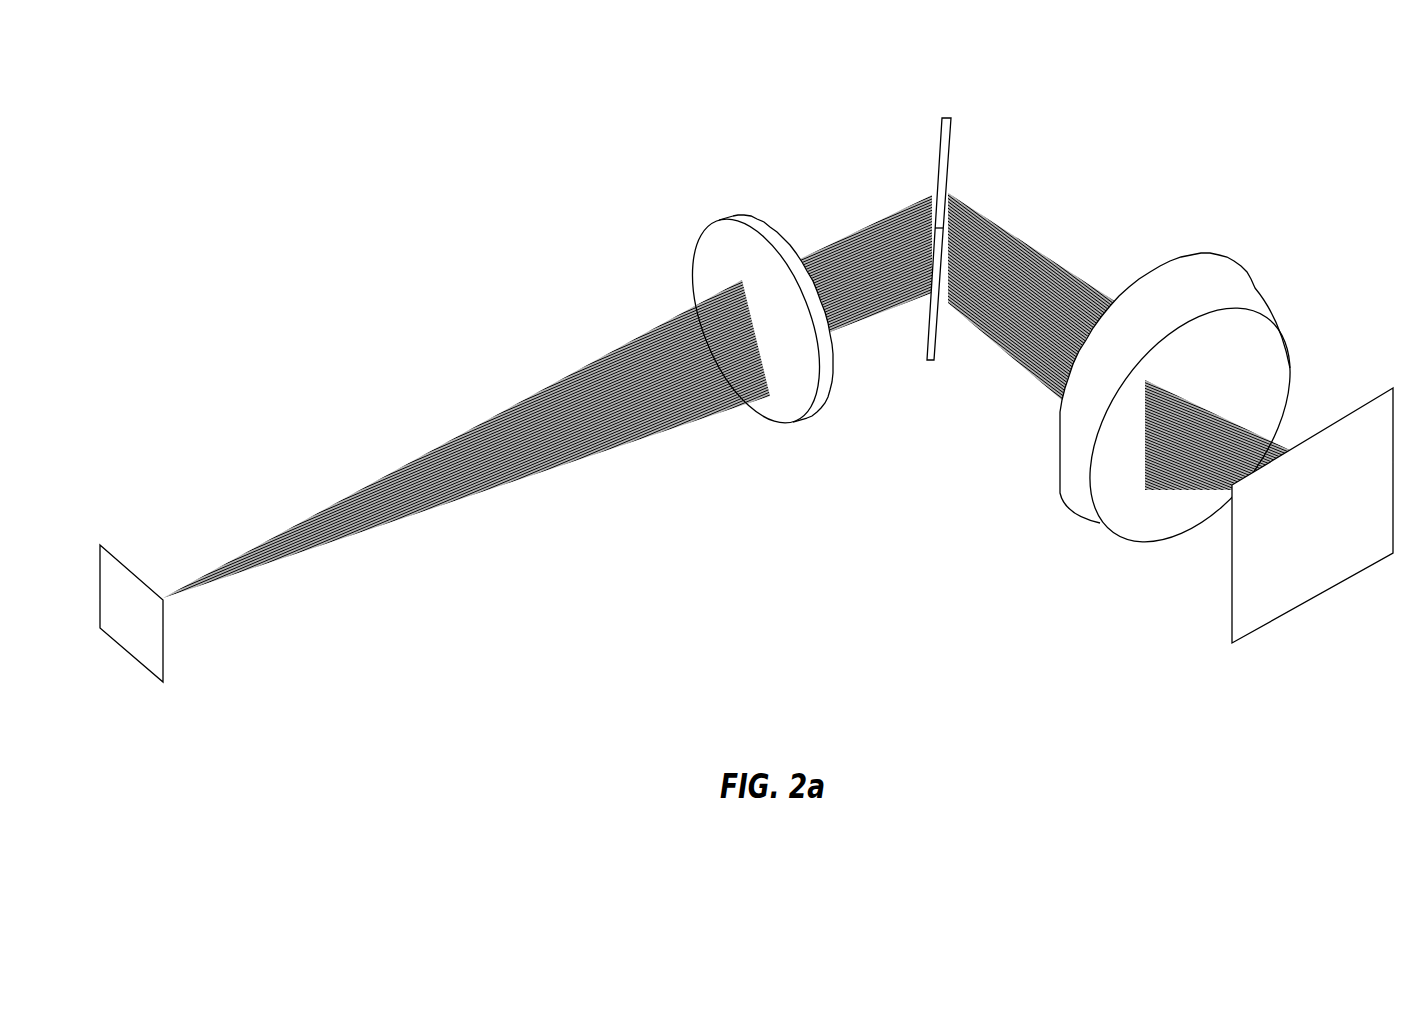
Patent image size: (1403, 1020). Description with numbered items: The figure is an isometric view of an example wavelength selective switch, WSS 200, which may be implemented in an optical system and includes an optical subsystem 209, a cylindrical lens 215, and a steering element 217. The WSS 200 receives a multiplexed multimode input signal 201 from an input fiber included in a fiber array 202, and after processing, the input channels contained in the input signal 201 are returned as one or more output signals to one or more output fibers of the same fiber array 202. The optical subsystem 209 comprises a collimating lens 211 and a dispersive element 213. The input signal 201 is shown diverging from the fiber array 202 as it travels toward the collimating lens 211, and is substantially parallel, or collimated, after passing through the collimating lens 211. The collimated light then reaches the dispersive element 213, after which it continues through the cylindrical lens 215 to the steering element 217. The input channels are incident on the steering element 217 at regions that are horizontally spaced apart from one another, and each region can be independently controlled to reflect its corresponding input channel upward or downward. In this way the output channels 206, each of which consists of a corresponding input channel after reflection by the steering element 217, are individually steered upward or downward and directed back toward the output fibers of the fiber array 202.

The WSS 200 is at (751, 409).
The input signal 201 is at (418, 498).
The fiber array 202 is at (164, 697).
The output channels 206 is at (1048, 170).
The optical subsystem 209 is at (814, 167).
The collimating lens 211 is at (772, 400).
The dispersive element 213 is at (938, 153).
The cylindrical lens 215 is at (1212, 286).
The steering element 217 is at (1332, 570).